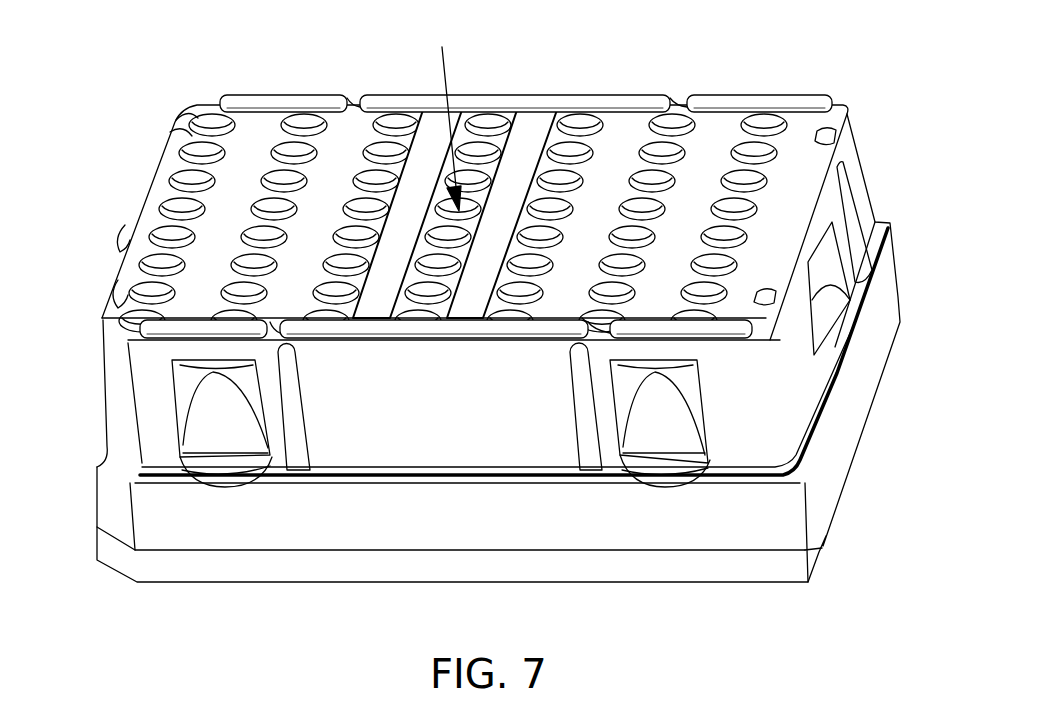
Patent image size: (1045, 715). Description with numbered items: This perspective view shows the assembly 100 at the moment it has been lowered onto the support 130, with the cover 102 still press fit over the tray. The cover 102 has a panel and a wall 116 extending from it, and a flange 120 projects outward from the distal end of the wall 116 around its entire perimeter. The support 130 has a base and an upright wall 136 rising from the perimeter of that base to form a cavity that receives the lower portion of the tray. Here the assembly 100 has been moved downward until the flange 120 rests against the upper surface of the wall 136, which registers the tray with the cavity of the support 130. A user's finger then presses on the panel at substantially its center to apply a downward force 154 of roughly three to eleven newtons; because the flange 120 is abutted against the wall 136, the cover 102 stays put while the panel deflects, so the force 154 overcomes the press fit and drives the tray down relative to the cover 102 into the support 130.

The assembly 100 is at (783, 73).
The cover 102 is at (153, 178).
The wall 116 is at (857, 205).
The flange 120 is at (108, 443).
The support 130 is at (215, 525).
The wall 136 is at (838, 422).
The force 154 is at (447, 72).